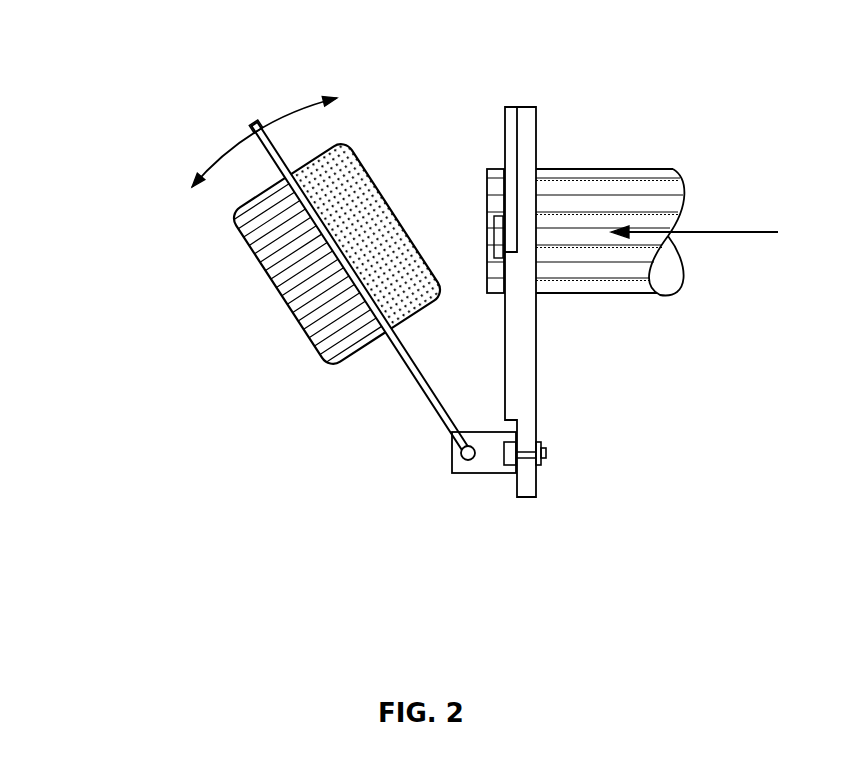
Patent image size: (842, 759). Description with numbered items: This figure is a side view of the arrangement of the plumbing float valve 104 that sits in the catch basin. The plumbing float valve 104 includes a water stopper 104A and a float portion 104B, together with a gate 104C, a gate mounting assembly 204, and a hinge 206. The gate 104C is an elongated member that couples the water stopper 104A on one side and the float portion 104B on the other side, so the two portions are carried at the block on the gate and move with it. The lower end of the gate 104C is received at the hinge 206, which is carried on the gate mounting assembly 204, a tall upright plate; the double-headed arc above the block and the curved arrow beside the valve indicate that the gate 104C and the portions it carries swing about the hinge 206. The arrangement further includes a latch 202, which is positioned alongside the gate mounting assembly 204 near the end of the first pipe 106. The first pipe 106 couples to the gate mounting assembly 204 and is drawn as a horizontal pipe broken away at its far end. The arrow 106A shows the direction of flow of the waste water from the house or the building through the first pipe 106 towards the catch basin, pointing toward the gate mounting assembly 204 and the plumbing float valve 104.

The plumbing float valve 104 is at (180, 332).
The water stopper 104A is at (368, 170).
The float portion 104B is at (243, 240).
The gate 104C is at (400, 365).
The first pipe 106 is at (663, 168).
The arrow 106A is at (694, 222).
The latch 202 is at (500, 250).
The gate mounting assembly 204 is at (537, 406).
The hinge 206 is at (460, 475).